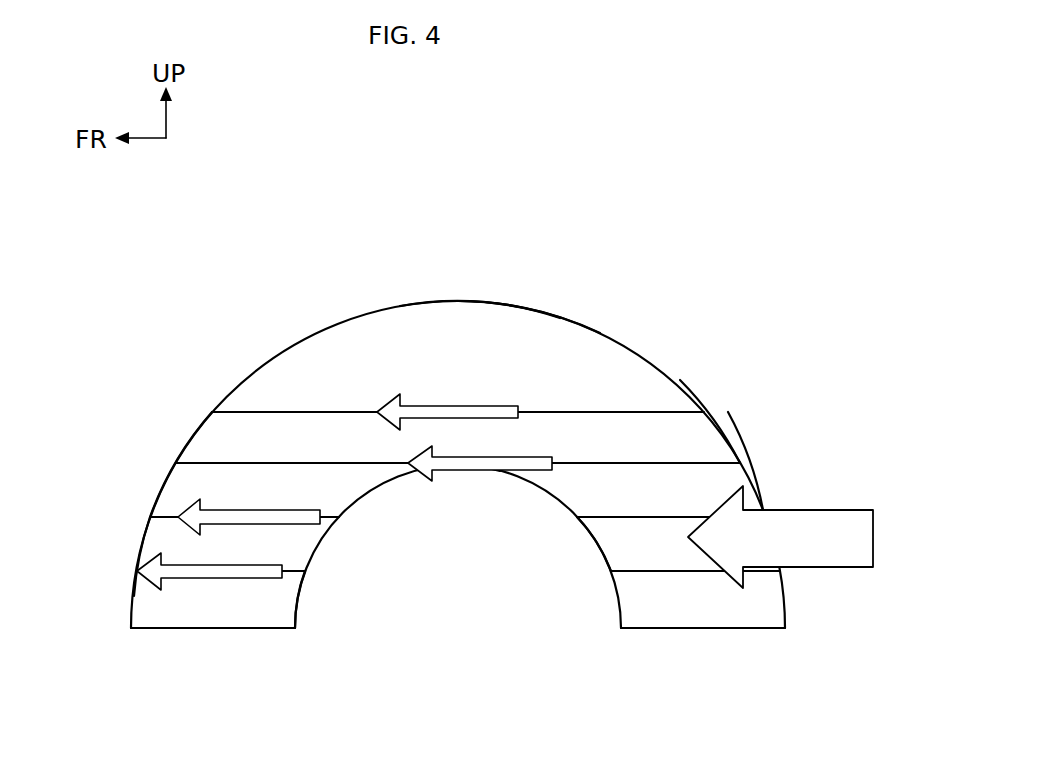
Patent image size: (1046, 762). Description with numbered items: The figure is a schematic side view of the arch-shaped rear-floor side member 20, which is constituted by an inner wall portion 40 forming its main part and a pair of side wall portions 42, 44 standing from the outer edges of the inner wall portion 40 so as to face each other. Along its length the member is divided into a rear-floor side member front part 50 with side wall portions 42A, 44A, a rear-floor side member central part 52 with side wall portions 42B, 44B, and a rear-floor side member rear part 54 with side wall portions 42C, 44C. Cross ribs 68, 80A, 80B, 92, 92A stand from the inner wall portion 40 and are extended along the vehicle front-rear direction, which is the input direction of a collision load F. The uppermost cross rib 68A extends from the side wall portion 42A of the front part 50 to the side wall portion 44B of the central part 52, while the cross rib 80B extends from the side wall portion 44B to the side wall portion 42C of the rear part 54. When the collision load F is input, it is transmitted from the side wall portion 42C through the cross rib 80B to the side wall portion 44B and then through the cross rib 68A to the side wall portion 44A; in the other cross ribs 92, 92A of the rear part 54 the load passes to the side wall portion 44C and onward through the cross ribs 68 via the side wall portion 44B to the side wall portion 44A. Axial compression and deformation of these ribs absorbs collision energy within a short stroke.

The rear-floor side member 20 is at (758, 282).
The inner wall portion 40 is at (540, 335).
The side wall portion 42 is at (450, 298).
The side wall portion 42A is at (140, 548).
The side wall portion 42B is at (412, 300).
The side wall portion 42C is at (752, 485).
The side wall portion 44 is at (370, 493).
The side wall portion 44A is at (300, 593).
The side wall portion 44B is at (512, 473).
The side wall portion 44C is at (598, 547).
The rear-floor side member front part 50 is at (167, 427).
The rear-floor side member central part 52 is at (505, 282).
The rear-floor side member rear part 54 is at (735, 427).
The cross ribs 68 is at (168, 560).
The uppermost cross rib 68A is at (222, 463).
The cross rib 80A is at (598, 412).
The cross rib 80B is at (625, 463).
The cross rib 92 is at (660, 515).
The cross rib 92A is at (683, 572).
The collision load F is at (818, 547).